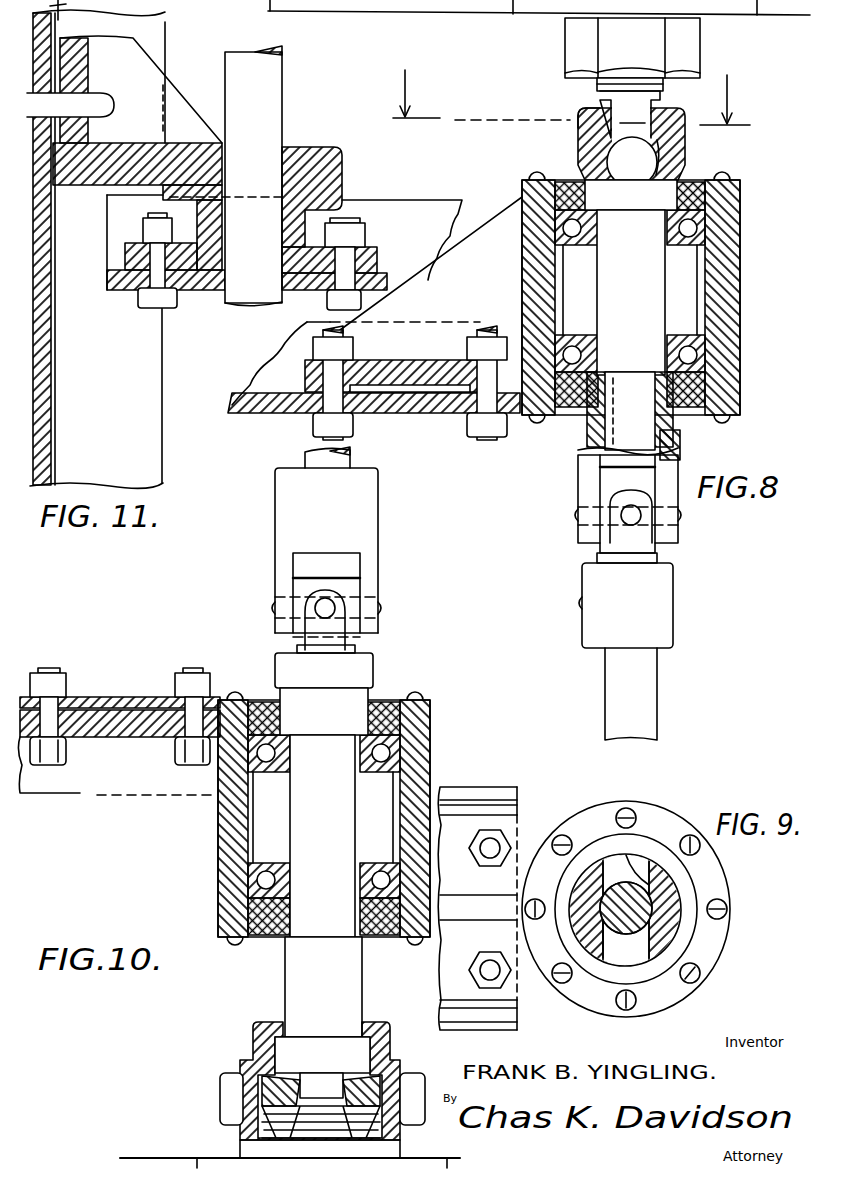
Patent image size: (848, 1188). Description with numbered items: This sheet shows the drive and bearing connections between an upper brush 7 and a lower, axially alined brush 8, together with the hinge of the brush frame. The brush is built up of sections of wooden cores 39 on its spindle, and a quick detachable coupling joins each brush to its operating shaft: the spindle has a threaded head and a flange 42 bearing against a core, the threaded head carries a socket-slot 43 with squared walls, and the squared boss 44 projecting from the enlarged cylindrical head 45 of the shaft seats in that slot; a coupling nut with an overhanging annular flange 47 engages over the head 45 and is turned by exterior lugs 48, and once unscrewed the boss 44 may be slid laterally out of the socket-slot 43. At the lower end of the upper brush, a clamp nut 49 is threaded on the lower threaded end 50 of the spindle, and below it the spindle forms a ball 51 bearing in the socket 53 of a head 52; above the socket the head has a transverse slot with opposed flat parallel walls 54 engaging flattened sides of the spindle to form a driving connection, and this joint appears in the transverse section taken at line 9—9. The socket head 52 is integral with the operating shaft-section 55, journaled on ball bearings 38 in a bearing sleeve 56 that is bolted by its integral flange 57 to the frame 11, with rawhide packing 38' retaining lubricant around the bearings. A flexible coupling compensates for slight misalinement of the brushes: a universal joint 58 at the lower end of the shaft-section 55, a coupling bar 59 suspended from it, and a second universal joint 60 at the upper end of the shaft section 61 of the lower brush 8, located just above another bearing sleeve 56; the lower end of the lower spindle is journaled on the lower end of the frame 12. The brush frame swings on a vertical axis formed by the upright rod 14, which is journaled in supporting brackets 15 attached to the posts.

In FIG. 8, the upper brush 7 is at (539, 28).
In FIG. 10, the lower brush 8 is at (290, 1145).
In FIG. 8, the section line 9— 9 is at (571, 111).
In FIG. 8, the frame 11 is at (300, 307).
In FIG. 9, the frame 11 is at (508, 795).
In FIG. 10, the frame 12 is at (114, 702).
In FIG. 11, the upright rod 14 is at (268, 97).
In FIG. 11, the supporting bracket 15 is at (90, 184).
In FIG. 8, the ball bearing 38 is at (630, 291).
In FIG. 10, the ball bearing 38 is at (324, 816).
In FIG. 8, the packing 38' is at (652, 324).
In FIG. 10, the packing 38' is at (349, 843).
In FIG. 8, the wooden core 39 is at (521, 9).
In FIG. 10, the flange 42 is at (243, 1147).
In FIG. 10, the socket-slot 43 is at (398, 1130).
In FIG. 10, the angular boss 44 is at (333, 1063).
In FIG. 10, the cylindrical head 45 is at (315, 1043).
In FIG. 10, the annular flange 47 is at (258, 1025).
In FIG. 10, the lug 48 is at (227, 1087).
In FIG. 8, the clamp nut 49 is at (568, 51).
In FIG. 8, the lower threaded end 50 is at (597, 85).
In FIG. 8, the ball 51 is at (630, 139).
In FIG. 9, the ball 51 is at (617, 942).
In FIG. 8, the head 52 is at (578, 143).
In FIG. 9, the head 52 is at (676, 922).
In FIG. 8, the socket 53 is at (655, 141).
In FIG. 9, the socket 53 is at (642, 885).
In FIG. 8, the flat parallel walls 54 is at (578, 118).
In FIG. 9, the flat parallel walls 54 is at (622, 927).
In FIG. 8, the operating shaft-section 55 is at (629, 320).
In FIG. 8, the bearing sleeve 56 is at (740, 307).
In FIG. 10, the bearing sleeve 56 is at (437, 762).
In FIG. 9, the bearing sleeve 56 is at (716, 797).
In FIG. 8, the integral flange 57 is at (412, 350).
In FIG. 10, the integral flange 57 is at (218, 925).
In FIG. 9, the integral flange 57 is at (496, 864).
In FIG. 8, the universal joint 58 is at (651, 551).
In FIG. 8, the coupling bar 59 is at (655, 697).
In FIG. 10, the coupling bar 59 is at (305, 453).
In FIG. 10, the second universal joint 60 is at (290, 578).
In FIG. 10, the shaft section 61 is at (324, 812).